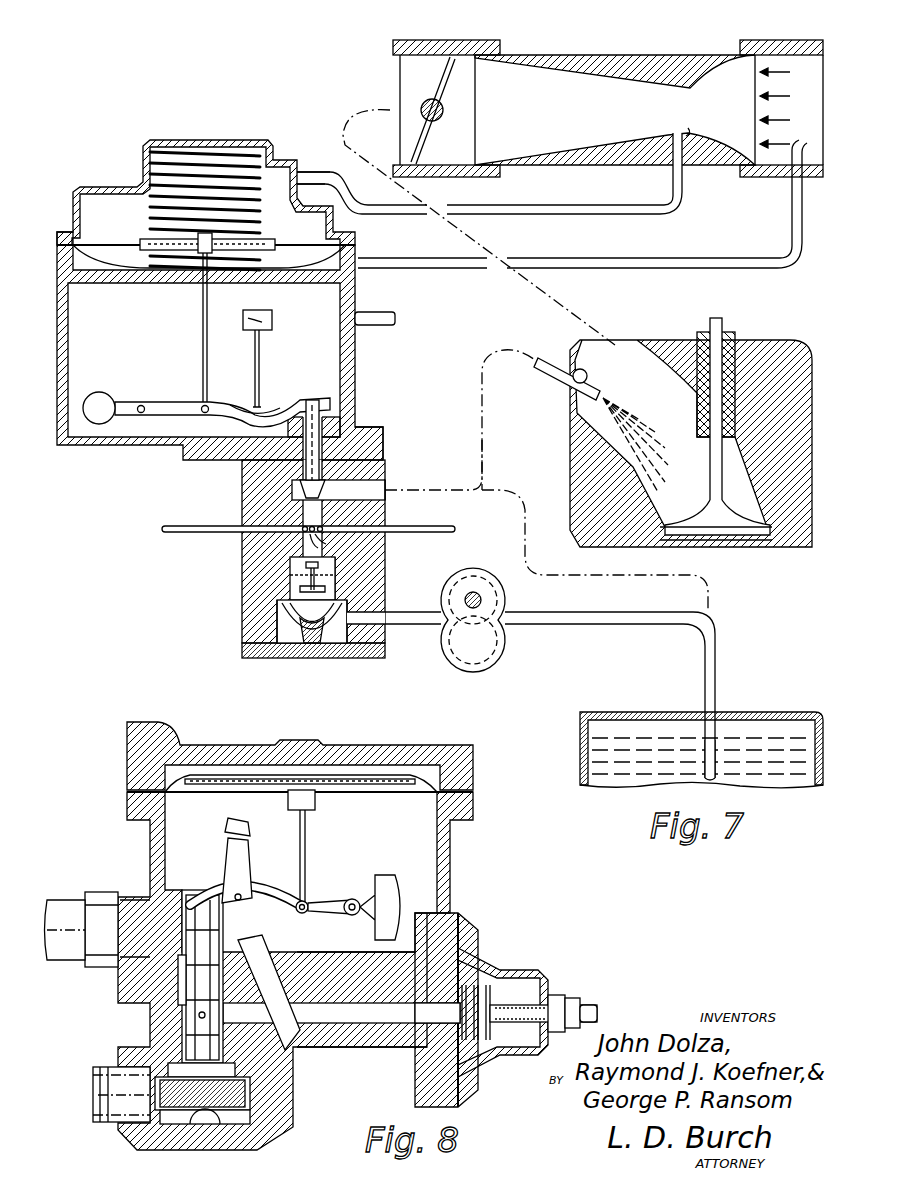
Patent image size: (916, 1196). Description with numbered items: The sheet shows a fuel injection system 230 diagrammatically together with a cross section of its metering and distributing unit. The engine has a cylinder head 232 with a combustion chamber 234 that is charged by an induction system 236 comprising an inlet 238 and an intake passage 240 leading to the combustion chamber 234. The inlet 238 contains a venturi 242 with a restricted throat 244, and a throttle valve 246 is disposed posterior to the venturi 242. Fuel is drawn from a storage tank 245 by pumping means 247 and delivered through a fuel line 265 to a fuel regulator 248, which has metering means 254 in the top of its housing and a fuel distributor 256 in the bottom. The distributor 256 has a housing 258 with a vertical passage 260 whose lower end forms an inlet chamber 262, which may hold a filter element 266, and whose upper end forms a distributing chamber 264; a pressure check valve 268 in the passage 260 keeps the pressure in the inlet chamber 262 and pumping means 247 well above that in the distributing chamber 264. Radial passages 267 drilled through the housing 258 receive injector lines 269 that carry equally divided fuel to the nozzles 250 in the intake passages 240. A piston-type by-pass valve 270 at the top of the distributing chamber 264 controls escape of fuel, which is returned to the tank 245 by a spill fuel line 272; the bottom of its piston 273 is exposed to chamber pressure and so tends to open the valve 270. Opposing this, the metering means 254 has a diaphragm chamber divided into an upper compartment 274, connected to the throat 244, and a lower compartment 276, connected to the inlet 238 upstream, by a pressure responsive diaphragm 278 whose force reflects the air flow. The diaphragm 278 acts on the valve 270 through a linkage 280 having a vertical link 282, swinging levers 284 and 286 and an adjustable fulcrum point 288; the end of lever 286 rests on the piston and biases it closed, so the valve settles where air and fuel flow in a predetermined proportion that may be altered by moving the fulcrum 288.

In FIG. 7, the fuel injection system 230 is at (242, 622).
In FIG. 7, the cylinder head 232 is at (790, 545).
In FIG. 7, the combustion chamber 234 is at (735, 545).
In FIG. 7, the induction system 236 is at (390, 62).
In FIG. 7, the inlet 238 is at (803, 40).
In FIG. 7, the intake passage 240 is at (645, 358).
In FIG. 8, the intake passage 240 is at (95, 1095).
In FIG. 7, the venturi 242 is at (594, 78).
In FIG. 7, the restricted throat 244 is at (680, 170).
In FIG. 7, the storage tank 245 is at (680, 712).
In FIG. 7, the throttle valve 246 is at (445, 87).
In FIG. 7, the pumping means 247 is at (505, 597).
In FIG. 7, the fuel regulator 248 is at (262, 618).
In FIG. 7, the nozzle 250 is at (555, 370).
In FIG. 7, the metering means 254 is at (358, 430).
In FIG. 7, the fuel distributor 256 is at (272, 507).
In FIG. 7, the housing 258 is at (380, 560).
In FIG. 7, the vertical passage 260 is at (337, 590).
In FIG. 7, the inlet chamber 262 is at (322, 645).
In FIG. 8, the inlet chamber 262 is at (235, 1071).
In FIG. 7, the distributing chamber 264 is at (370, 520).
In FIG. 7, the fuel line 265 is at (418, 625).
In FIG. 7, the filter element 266 is at (305, 647).
In FIG. 8, the filter element 266 is at (252, 1102).
In FIG. 7, the radial passage 267 is at (325, 533).
In FIG. 7, the pressure check valve 268 is at (288, 583).
In FIG. 7, the injector line 269 is at (193, 533).
In FIG. 7, the by-pass valve 270 is at (303, 468).
In FIG. 8, the by-pass valve 270 is at (200, 895).
In FIG. 7, the spill fuel line 272 is at (487, 488).
In FIG. 8, the spill fuel line 272 is at (55, 950).
In FIG. 7, the piston 273 is at (320, 500).
In FIG. 7, the upper compartment 274 is at (113, 195).
In FIG. 8, the upper compartment 274 is at (425, 772).
In FIG. 7, the lower compartment 276 is at (100, 270).
In FIG. 8, the lower compartment 276 is at (420, 833).
In FIG. 7, the pressure responsive diaphragm 278 is at (340, 228).
In FIG. 8, the pressure responsive diaphragm 278 is at (352, 795).
In FIG. 7, the linkage 280 is at (190, 400).
In FIG. 7, the vertical link 282 is at (200, 303).
In FIG. 8, the vertical link 282 is at (306, 845).
In FIG. 7, the swinging lever 284 is at (160, 405).
In FIG. 8, the swinging lever 284 is at (340, 905).
In FIG. 7, the swinging lever 286 is at (240, 412).
In FIG. 8, the swinging lever 286 is at (290, 910).
In FIG. 7, the adjustable fulcrum point 288 is at (262, 400).
In FIG. 8, the adjustable fulcrum point 288 is at (240, 862).